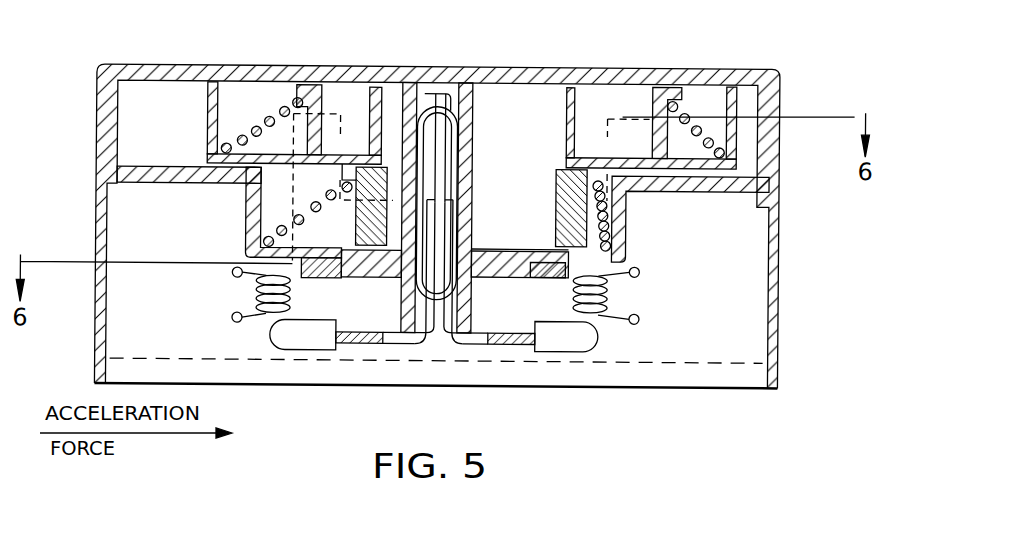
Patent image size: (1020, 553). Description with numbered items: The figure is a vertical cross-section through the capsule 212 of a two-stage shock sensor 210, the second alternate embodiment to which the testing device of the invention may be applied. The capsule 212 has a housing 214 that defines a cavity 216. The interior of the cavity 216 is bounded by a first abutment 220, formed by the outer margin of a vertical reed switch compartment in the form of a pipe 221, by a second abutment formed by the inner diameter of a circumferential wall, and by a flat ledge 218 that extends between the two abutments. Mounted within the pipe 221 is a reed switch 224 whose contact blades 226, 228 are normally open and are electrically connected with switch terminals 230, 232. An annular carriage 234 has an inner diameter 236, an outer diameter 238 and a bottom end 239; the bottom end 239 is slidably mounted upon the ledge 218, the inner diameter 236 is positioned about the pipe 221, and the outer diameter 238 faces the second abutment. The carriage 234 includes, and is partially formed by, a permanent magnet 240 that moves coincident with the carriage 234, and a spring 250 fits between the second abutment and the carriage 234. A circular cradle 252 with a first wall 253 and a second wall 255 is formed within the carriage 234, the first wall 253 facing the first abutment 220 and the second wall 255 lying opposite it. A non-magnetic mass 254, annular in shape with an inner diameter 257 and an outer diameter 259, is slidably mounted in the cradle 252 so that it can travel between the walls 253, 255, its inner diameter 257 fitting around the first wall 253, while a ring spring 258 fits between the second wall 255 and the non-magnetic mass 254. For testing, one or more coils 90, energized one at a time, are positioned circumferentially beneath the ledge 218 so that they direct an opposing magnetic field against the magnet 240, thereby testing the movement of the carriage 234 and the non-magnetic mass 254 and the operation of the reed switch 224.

The shock sensor 210 is at (453, 233).
The capsule 212 is at (779, 319).
The housing 214 is at (779, 361).
The cavity 216 is at (150, 129).
The flat ledge 218 is at (498, 275).
The first abutment 220 is at (468, 86).
The pipe 221 is at (464, 142).
The reed switch 224 is at (468, 154).
The contact blade 226 is at (462, 172).
The contact blade 228 is at (418, 277).
The switch terminal 230 is at (494, 343).
The switch terminal 232 is at (399, 346).
The annular carriage 234 is at (622, 257).
The inner diameter 236 is at (556, 178).
The outer diameter 238 is at (357, 229).
The bottom end 239 is at (344, 287).
The permanent magnet 240 is at (556, 240).
The spring 250 is at (280, 231).
The circular cradle 252 is at (372, 85).
The first wall 253 is at (568, 84).
The non-magnetic mass 254 is at (680, 92).
The second wall 255 is at (730, 84).
The inner diameter 257 is at (306, 83).
The ring spring 258 is at (270, 116).
The outer diameter 259 is at (673, 137).
The coils 90 is at (258, 318).